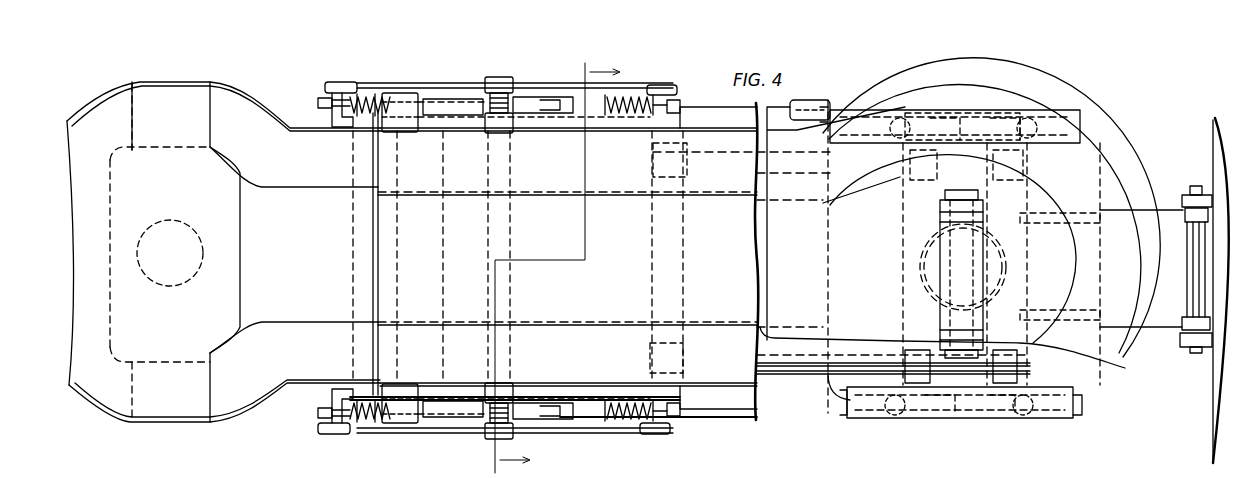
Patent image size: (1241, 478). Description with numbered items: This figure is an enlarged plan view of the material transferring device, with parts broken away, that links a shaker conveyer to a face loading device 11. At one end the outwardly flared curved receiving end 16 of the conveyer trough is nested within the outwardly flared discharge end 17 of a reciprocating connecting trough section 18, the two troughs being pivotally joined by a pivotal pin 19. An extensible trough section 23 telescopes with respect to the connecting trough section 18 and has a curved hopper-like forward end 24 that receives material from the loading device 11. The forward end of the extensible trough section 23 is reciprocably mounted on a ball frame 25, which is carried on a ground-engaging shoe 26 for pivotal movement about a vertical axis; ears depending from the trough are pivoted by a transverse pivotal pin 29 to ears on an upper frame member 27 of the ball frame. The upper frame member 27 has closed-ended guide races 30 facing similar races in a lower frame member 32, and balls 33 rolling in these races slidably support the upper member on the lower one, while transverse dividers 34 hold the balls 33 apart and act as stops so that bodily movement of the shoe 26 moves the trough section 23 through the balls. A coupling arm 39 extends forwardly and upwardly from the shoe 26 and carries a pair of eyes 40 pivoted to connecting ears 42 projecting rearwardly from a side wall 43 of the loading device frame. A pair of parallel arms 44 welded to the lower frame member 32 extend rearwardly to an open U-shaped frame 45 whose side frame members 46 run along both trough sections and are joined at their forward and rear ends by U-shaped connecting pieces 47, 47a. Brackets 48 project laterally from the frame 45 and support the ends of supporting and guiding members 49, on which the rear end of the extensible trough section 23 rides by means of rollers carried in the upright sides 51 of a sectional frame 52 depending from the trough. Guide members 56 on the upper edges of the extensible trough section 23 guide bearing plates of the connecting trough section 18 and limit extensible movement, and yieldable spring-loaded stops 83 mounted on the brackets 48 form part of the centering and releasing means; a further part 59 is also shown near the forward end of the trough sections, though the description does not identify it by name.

The face loading device 11 is at (1210, 448).
The receiving end 16 is at (117, 403).
The discharge end 17 is at (206, 80).
The connecting trough section 18 is at (259, 407).
The pivotal pin 19 is at (190, 238).
The extensible trough section 23 is at (777, 330).
The hopper-like forward end 24 is at (1112, 186).
The ball frame 25 is at (1030, 108).
The ground-engaging shoe 26 is at (953, 193).
The upper frame member 27 is at (945, 218).
The transverse pivotal pin 29 is at (960, 262).
The guide races 30 is at (1072, 383).
The lower frame member 32 is at (1075, 420).
The balls 33 is at (893, 117).
The dividers 34 is at (930, 142).
The coupling arm 39 is at (1142, 332).
The eyes 40 is at (1197, 213).
The connecting ears 42 is at (1170, 338).
The side wall 43 is at (1212, 371).
The arms 44 is at (843, 153).
The frame 45 is at (688, 308).
The side frame members 46 is at (602, 138).
The connecting piece 47 is at (690, 240).
The connecting piece 47a is at (344, 254).
The brackets 48 is at (326, 85).
The supporting and guiding members 49 is at (416, 83).
The upright sides 51 is at (495, 440).
The frame 52 is at (517, 257).
The guide members 56 is at (414, 133).
The stop block 59 is at (801, 98).
The yieldable stops 83 is at (358, 425).